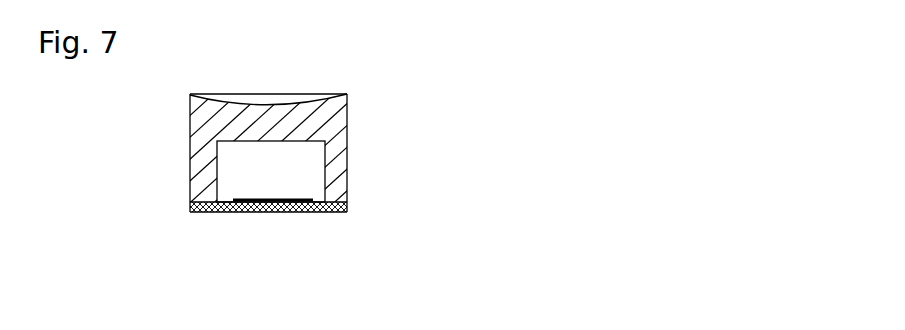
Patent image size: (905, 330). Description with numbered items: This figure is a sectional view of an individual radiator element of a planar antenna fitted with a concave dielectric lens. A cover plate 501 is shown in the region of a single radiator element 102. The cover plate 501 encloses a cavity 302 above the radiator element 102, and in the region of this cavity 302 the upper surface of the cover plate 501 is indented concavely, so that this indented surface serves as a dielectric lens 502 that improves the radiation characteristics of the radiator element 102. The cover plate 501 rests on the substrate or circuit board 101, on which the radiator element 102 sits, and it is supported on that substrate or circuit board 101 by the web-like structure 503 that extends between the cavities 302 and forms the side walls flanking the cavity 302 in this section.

The substrate or circuit board 101 is at (318, 213).
The radiator element 102 is at (250, 212).
The cavity 302 is at (310, 170).
The cover plate 501 is at (312, 123).
The dielectric lens 502 is at (235, 105).
The web-like structure 503 is at (205, 170).